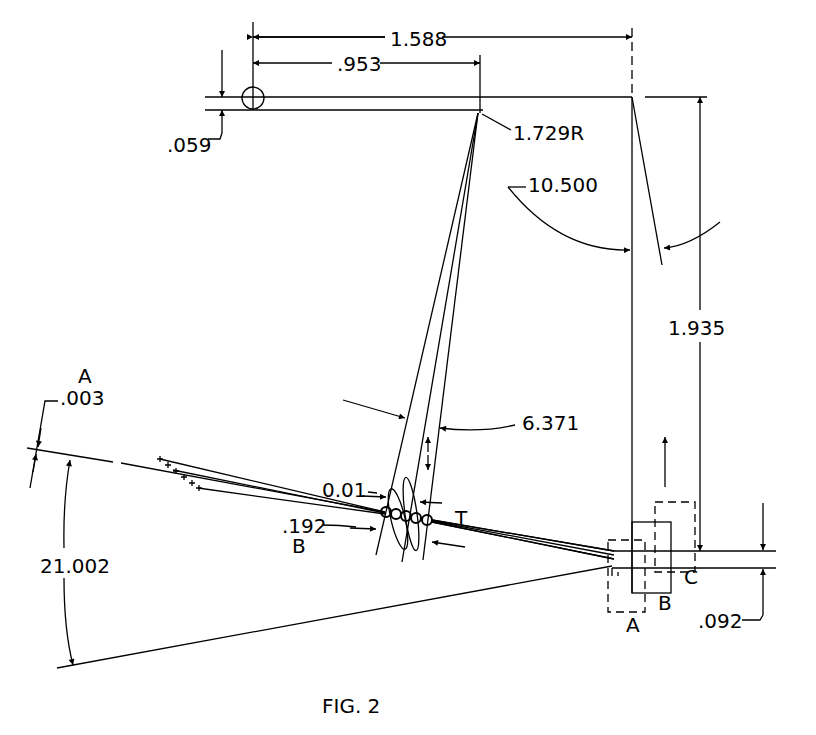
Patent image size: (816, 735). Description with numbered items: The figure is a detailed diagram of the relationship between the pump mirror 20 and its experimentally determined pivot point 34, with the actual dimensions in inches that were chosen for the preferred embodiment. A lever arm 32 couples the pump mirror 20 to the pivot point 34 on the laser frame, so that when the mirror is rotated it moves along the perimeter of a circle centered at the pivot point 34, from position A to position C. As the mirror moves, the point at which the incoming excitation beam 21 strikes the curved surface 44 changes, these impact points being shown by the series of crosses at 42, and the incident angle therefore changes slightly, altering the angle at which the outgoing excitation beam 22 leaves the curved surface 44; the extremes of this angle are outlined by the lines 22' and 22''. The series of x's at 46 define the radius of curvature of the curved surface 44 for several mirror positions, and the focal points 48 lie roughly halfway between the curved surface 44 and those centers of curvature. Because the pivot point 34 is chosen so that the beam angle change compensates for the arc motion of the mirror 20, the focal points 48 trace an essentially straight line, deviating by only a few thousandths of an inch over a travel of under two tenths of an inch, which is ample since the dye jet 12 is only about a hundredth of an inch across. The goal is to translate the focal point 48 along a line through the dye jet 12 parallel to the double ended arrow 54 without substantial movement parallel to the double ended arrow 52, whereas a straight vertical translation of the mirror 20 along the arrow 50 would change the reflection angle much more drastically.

The pivot point 34 is at (255, 110).
The lever arm 32 is at (353, 100).
The dye jet 12 is at (388, 552).
The double ended arrow 54 is at (418, 553).
The focal points 48 is at (443, 513).
The double ended arrow 52 is at (434, 456).
The series of x's 46 is at (178, 475).
The excitation beam 22 is at (523, 539).
The excitation beam angle extreme 22' is at (523, 545).
The excitation beam angle extreme 22'' is at (523, 525).
The incoming excitation beam 21 is at (392, 606).
The pump mirror 20 is at (695, 517).
The arrow 50 is at (665, 465).
The curved surface 44 is at (611, 575).
The series of crosses 42 is at (618, 572).